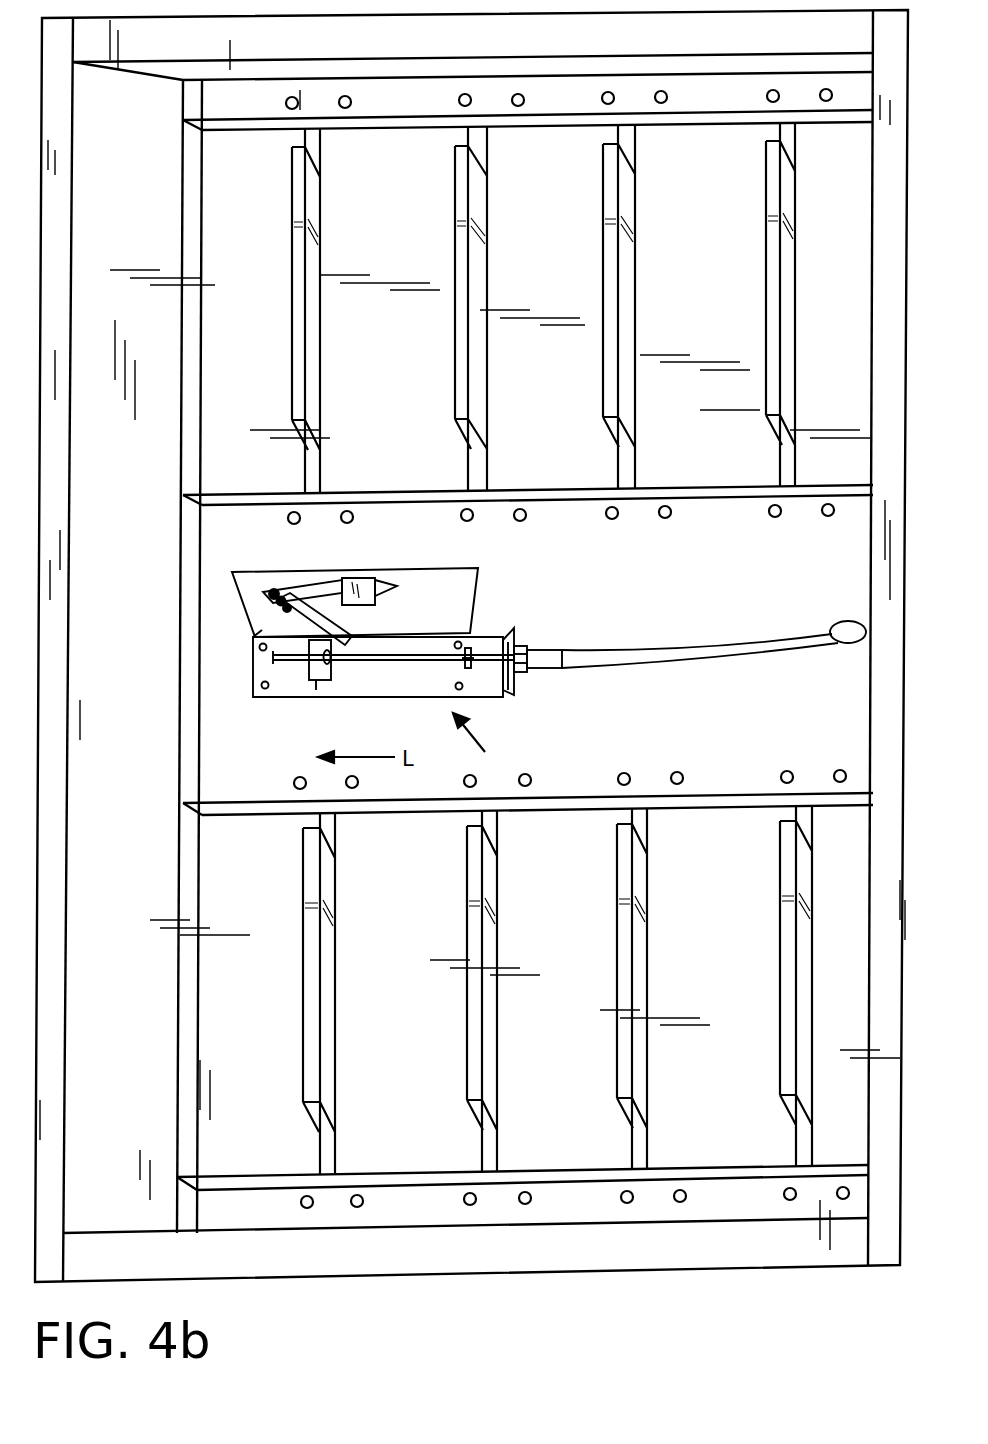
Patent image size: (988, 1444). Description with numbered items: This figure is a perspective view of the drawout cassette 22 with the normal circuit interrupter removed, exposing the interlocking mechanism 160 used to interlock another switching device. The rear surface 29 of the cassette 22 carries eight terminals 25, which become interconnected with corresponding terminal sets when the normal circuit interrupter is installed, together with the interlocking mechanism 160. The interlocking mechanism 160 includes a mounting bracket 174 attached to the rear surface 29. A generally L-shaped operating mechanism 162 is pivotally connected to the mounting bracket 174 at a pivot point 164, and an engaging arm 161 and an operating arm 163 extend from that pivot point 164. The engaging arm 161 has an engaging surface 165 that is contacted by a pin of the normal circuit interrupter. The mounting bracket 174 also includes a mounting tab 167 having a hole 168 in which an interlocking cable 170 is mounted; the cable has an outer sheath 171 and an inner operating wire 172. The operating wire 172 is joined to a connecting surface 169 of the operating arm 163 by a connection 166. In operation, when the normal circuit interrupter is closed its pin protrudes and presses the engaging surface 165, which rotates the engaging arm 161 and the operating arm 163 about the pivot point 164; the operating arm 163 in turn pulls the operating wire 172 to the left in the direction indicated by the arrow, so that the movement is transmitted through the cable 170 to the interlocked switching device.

The drawout cassette 22 is at (487, 1326).
The terminals 25 is at (322, 222).
The rear surface 29 is at (757, 525).
The interlocking mechanism 160 is at (493, 744).
The engaging arm 161 is at (332, 583).
The operating mechanism 162 is at (305, 590).
The operating arm 163 is at (300, 615).
The pivot point 164 is at (258, 633).
The engaging surface 165 is at (400, 588).
The connection 166 is at (318, 668).
The mounting tab 167 is at (506, 690).
The hole 168 is at (528, 670).
The connecting surface 169 is at (333, 675).
The interlocking cable 170 is at (655, 650).
The outer sheath 171 is at (583, 668).
The operating wire 172 is at (257, 680).
The mounting bracket 174 is at (455, 604).